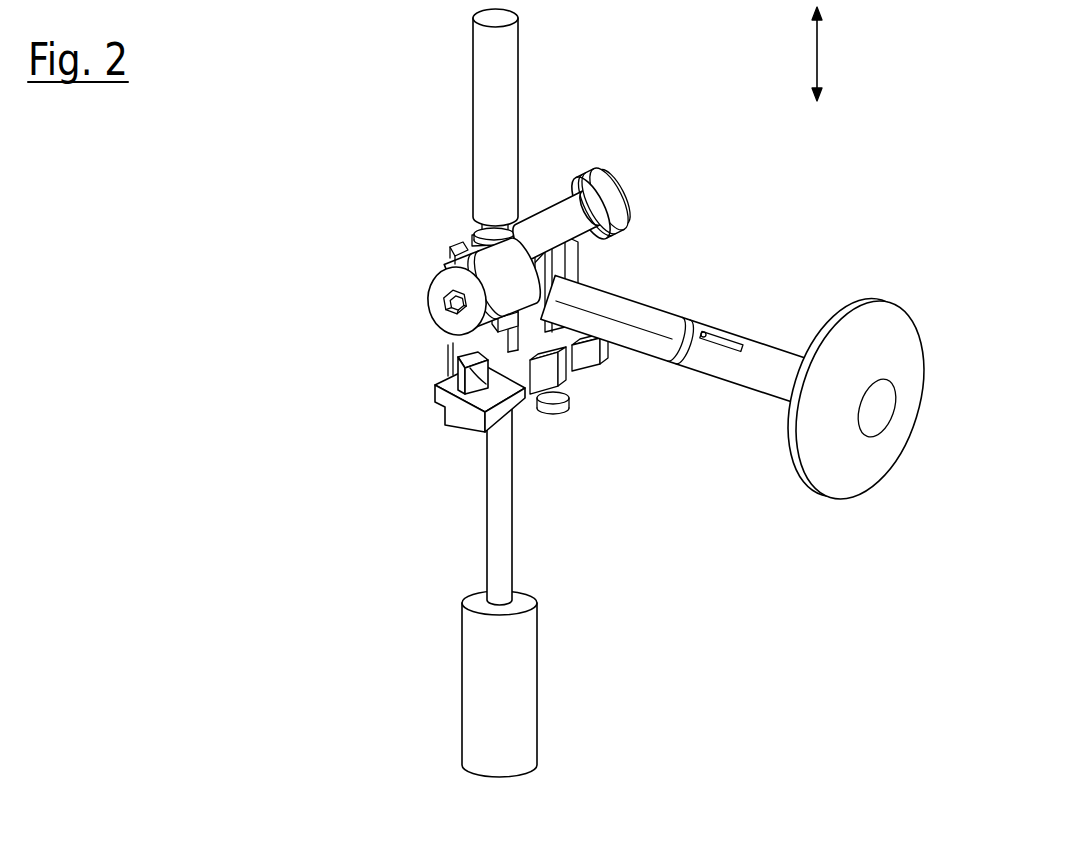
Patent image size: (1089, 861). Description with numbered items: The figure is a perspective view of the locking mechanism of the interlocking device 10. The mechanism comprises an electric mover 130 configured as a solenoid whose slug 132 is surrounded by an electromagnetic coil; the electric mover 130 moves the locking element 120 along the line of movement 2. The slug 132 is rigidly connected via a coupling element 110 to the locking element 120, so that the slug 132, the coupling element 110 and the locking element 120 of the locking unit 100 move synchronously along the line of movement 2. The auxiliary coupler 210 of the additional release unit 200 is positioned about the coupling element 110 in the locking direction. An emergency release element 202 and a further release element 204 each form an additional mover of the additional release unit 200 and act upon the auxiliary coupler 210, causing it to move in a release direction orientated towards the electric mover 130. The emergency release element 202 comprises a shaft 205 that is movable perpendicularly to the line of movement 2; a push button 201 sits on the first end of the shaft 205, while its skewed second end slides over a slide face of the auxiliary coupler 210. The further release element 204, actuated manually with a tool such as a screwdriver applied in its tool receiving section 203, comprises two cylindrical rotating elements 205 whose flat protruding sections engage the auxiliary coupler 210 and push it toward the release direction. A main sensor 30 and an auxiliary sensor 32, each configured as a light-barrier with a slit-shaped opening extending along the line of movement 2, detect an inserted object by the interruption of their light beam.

The line of movement 2 is at (828, 54).
The interlocking device 10 is at (682, 392).
The main sensor 30 is at (603, 362).
The auxiliary sensor 32 is at (567, 378).
The locking unit 100 is at (483, 220).
The coupling element 110 is at (450, 352).
The locking element 120 is at (513, 83).
The electric mover 130 is at (557, 591).
The slug 132 is at (513, 507).
The additional release unit 200 is at (714, 316).
The push button 201 is at (922, 385).
The emergency release element 202 is at (923, 367).
The tool receiving section 203 is at (445, 295).
The further release element 204 is at (623, 200).
The shaft 205 is at (595, 270).
The auxiliary coupler 210 is at (587, 268).